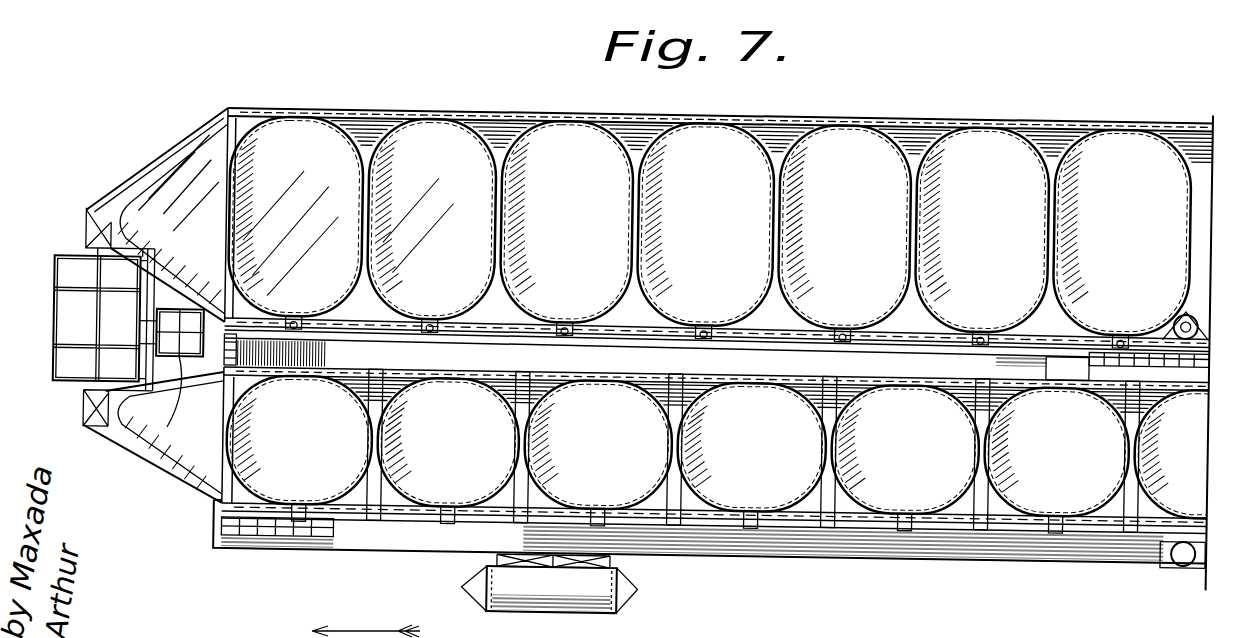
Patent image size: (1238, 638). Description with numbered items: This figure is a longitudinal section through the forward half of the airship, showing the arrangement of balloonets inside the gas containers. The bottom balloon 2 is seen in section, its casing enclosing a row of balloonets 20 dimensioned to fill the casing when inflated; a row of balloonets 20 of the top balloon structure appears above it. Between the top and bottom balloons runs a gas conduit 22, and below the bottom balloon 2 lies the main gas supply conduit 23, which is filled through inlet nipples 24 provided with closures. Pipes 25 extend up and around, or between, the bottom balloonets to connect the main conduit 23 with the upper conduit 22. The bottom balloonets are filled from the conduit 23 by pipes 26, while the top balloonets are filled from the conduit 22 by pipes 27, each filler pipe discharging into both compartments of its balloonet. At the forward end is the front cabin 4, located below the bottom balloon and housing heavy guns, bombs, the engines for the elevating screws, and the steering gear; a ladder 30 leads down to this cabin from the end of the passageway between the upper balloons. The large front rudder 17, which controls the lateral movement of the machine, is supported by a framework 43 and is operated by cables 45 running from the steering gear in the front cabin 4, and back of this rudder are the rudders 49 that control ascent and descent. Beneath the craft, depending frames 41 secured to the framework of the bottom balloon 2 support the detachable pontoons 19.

The bottom balloon 2 is at (973, 498).
The cabin 4 is at (292, 535).
The rudder 17 is at (76, 371).
The pontoon 19 is at (549, 590).
The balloonet 20 is at (731, 318).
The gas conduit 22 is at (717, 349).
The main gas supply conduit 23 is at (714, 533).
The inlet nipple 24 is at (1190, 551).
The pipe 25 is at (554, 475).
The pipe 26 is at (458, 498).
The pipe 27 is at (440, 317).
The ladder 30 is at (245, 440).
The depending frame 41 is at (620, 558).
The framework 43 is at (95, 415).
The cable 45 is at (155, 323).
The rudder 49 is at (181, 402).